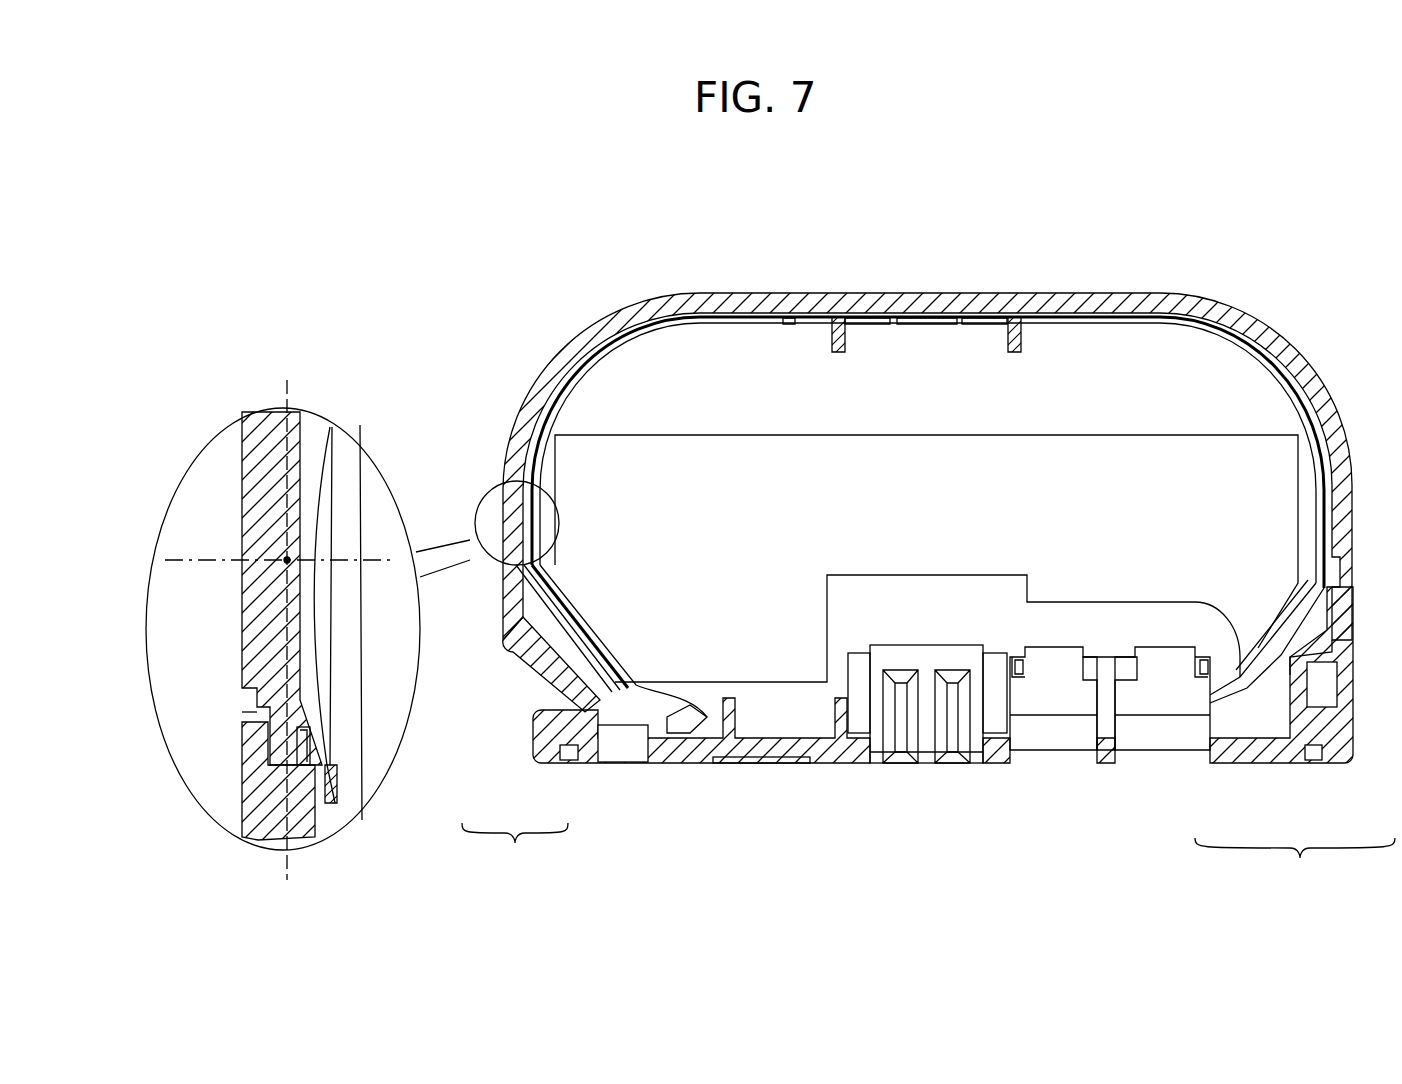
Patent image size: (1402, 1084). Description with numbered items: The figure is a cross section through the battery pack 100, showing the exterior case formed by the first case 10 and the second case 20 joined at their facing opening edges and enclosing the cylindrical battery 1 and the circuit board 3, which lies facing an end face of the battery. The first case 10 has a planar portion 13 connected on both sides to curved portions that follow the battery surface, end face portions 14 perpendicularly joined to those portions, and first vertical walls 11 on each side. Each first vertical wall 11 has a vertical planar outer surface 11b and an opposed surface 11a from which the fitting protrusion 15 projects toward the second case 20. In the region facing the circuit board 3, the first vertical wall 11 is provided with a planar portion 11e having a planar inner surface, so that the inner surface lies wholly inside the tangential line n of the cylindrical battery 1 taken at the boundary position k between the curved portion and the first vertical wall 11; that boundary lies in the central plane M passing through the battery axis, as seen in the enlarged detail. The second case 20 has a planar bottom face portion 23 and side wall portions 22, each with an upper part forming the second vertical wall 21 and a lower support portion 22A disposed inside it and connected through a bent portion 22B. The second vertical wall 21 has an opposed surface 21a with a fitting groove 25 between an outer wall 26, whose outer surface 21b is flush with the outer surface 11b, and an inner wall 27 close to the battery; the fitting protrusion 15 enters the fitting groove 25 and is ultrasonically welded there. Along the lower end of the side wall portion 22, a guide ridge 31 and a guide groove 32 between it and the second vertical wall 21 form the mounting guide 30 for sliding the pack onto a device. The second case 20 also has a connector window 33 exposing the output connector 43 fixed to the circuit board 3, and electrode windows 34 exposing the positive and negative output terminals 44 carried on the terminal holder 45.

The battery pack 100 is at (608, 228).
The first case 10 is at (1250, 235).
The cylindrical battery 1 is at (528, 395).
The circuit board 3 is at (712, 370).
The planar portion 13 is at (930, 300).
The end face portion 14 is at (565, 365).
The first vertical wall 11 is at (505, 478).
The opposed surface 11a is at (268, 848).
The outer surface 11b is at (240, 655).
The planar portion 11e is at (300, 640).
The second vertical wall 21 is at (520, 600).
The opposed surface 21a is at (240, 712).
The outer surface 21b is at (240, 775).
The second case 20 is at (700, 775).
The side wall portion 22 is at (1295, 870).
The support portion 22A is at (1295, 705).
The bent portion 22B is at (1325, 710).
The bottom face portion 23 is at (775, 762).
The fitting groove 25 is at (320, 812).
The outer wall 26 is at (312, 745).
The inner wall 27 is at (250, 730).
The fitting protrusion 15 is at (340, 775).
The mounting guide 30 is at (515, 855).
The guide ridge 31 is at (532, 720).
The guide groove 32 is at (540, 685).
The connector window 33 is at (880, 775).
The electrode window 34 is at (1040, 768).
The output connector 43 is at (930, 655).
The output terminal 44 is at (1060, 735).
The terminal holder 45 is at (1113, 665).
The central plane M is at (178, 560).
The boundary position k is at (283, 557).
The tangential line n is at (290, 862).